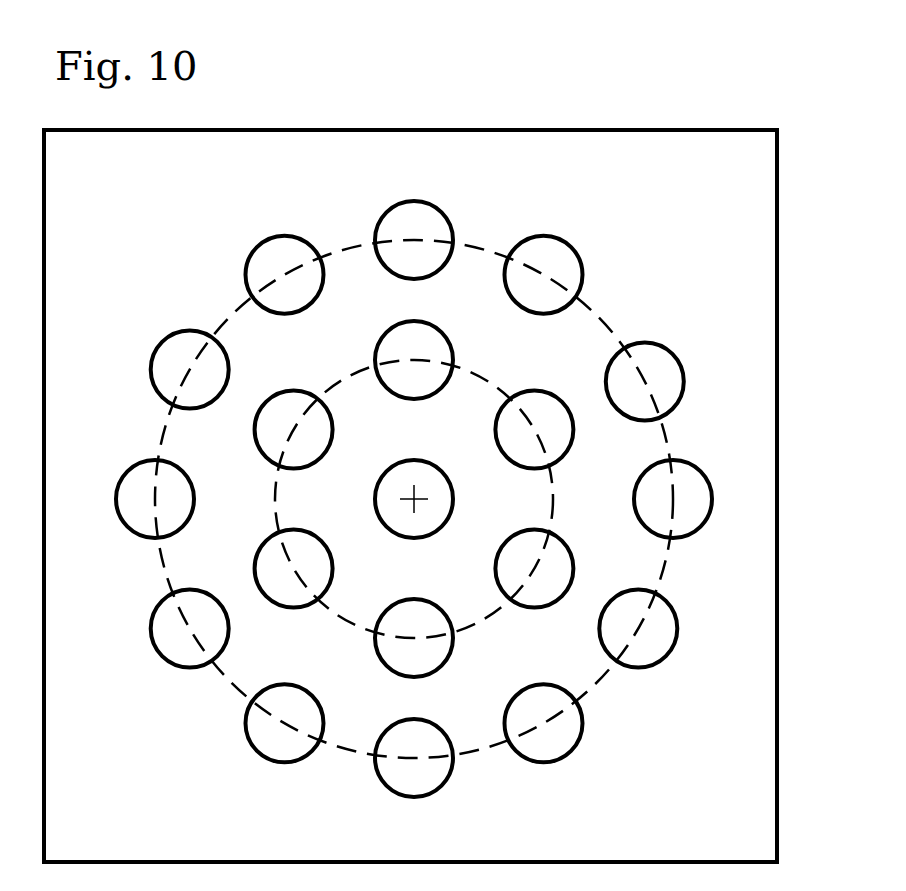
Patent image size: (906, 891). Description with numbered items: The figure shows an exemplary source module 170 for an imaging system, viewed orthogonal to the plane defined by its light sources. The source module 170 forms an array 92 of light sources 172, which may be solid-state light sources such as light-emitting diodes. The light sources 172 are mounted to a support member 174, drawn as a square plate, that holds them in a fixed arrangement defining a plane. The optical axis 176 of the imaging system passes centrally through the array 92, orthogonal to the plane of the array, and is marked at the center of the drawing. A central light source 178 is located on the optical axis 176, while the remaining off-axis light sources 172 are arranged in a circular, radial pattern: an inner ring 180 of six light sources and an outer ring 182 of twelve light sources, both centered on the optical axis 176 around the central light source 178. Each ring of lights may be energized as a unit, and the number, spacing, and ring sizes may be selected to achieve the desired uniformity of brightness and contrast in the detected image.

The source module 170 is at (403, 108).
The support member 174 is at (618, 130).
The array 92 is at (215, 240).
The light sources 172 is at (447, 213).
The outer ring 182 is at (666, 443).
The inner ring 180 is at (554, 517).
The central light source 178 is at (412, 460).
The optical axis 176 is at (415, 500).